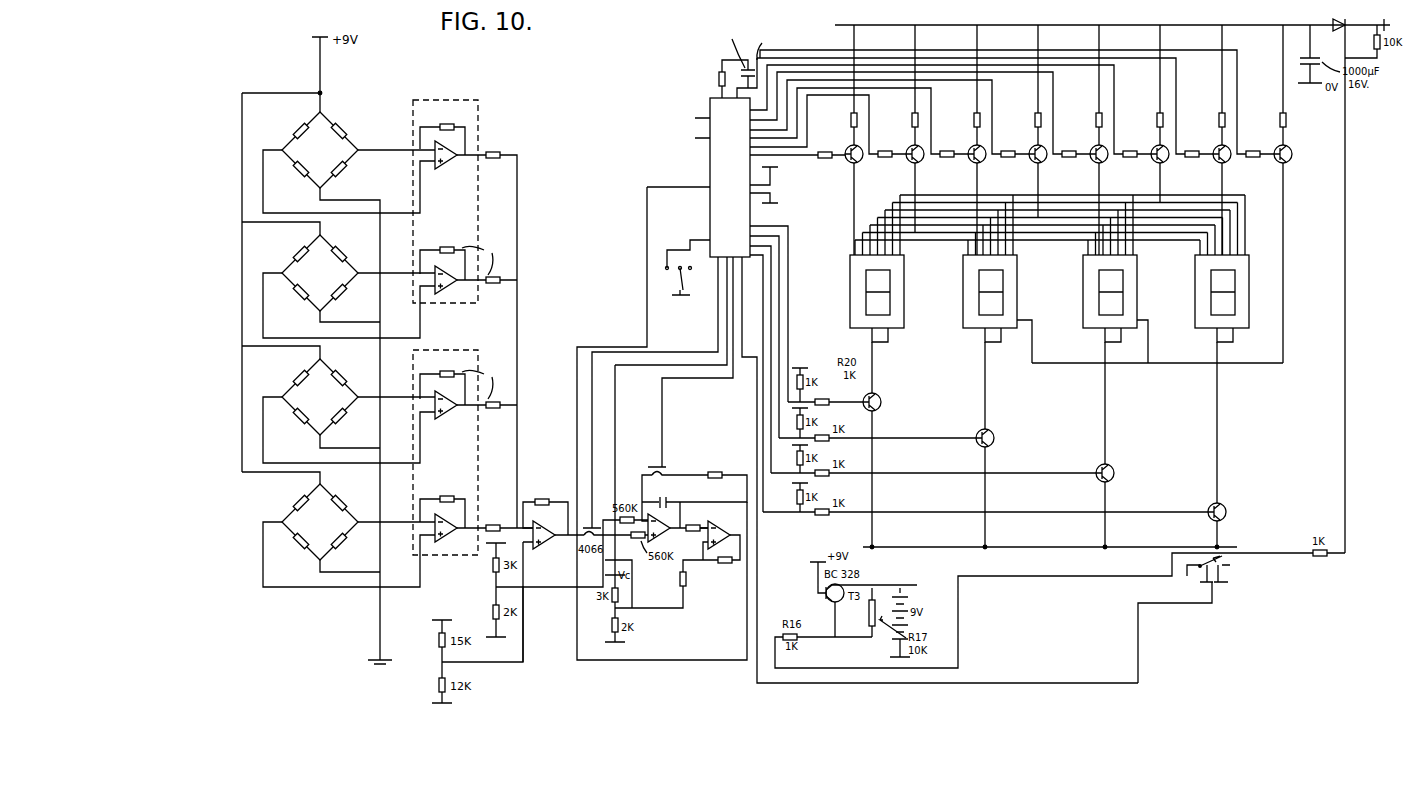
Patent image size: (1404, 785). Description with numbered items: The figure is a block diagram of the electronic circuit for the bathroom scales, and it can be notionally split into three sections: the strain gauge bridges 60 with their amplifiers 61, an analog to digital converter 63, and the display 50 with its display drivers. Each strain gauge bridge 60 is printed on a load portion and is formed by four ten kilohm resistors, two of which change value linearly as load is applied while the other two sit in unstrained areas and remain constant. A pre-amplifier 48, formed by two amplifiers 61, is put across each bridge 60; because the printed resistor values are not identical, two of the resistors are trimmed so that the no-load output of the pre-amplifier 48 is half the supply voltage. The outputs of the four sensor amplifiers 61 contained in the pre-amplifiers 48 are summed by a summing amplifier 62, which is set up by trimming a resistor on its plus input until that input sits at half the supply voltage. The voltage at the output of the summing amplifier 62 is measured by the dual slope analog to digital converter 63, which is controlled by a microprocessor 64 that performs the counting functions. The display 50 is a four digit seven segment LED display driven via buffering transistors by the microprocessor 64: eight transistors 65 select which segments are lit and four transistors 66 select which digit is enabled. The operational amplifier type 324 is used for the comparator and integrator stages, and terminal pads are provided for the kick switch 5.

The kick switch 5 is at (1214, 580).
The pre-amplifier 48 is at (455, 229).
The display 50 is at (963, 292).
The strain gauge bridge 60 is at (318, 135).
The amplifier 61 is at (447, 163).
The summing amplifier 62 is at (546, 578).
The analog to digital converter 63 is at (658, 578).
The microprocessor 64 is at (742, 213).
The transistors 65 is at (910, 162).
The transistors 66 is at (978, 432).
The operational amplifier 324 is at (521, 548).